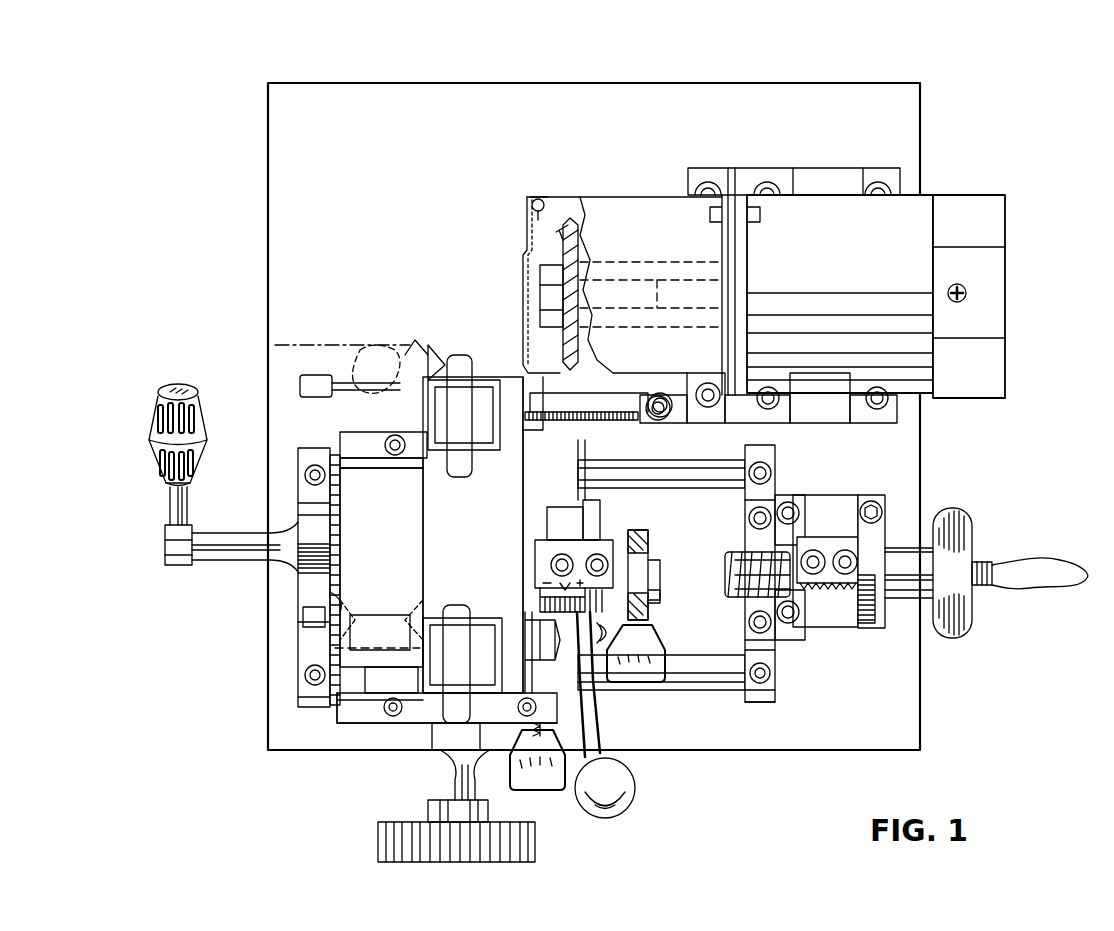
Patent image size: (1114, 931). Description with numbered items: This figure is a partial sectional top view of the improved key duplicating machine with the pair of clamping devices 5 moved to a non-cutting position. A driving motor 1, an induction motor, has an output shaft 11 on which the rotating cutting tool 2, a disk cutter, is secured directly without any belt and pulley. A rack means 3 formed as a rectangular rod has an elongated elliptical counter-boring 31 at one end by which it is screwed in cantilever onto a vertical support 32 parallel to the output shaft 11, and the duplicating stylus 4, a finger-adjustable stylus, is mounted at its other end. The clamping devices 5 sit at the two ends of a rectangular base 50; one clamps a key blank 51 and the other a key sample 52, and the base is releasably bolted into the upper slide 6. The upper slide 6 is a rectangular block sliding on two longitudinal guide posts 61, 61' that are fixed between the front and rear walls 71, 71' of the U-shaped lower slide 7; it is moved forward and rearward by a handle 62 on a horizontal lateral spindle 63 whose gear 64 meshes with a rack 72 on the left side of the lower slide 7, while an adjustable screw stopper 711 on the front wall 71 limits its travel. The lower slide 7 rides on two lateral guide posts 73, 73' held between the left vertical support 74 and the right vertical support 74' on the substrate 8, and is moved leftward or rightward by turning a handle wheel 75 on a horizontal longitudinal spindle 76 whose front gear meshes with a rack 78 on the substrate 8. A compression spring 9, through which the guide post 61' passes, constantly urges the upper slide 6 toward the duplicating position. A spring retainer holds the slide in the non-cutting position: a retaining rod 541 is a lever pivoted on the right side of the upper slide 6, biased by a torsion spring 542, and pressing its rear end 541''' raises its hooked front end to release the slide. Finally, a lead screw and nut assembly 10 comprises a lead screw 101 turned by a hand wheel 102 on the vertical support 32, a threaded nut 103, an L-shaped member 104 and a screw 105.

The driving motor 1 is at (930, 192).
The rotating cutting tool 2 is at (558, 228).
The output shaft 11 is at (627, 270).
The rack 78 is at (567, 400).
The clamping devices 5 is at (416, 428).
The rectangular base 50 is at (514, 372).
The key blank 51 is at (275, 345).
The handle 62 is at (166, 383).
The horizontal lateral spindle 63 is at (213, 563).
The left vertical support 74 is at (263, 583).
The gear 64 is at (330, 585).
The rack 72 is at (330, 597).
The key sample 52 is at (335, 657).
The front wall 71 is at (320, 414).
The upper slide 6 is at (353, 480).
The substrate 8 is at (356, 754).
The lower slide 7 is at (330, 724).
The rear wall 71' is at (377, 777).
The guide post 61 is at (309, 728).
The horizontal longitudinal spindle 76 is at (442, 764).
The handle wheel 75 is at (420, 864).
The guide post 61' is at (541, 804).
The compression spring 9 is at (568, 815).
The duplicating stylus 4 is at (575, 823).
The torsion spring 542 is at (607, 600).
The retaining rod 541 is at (651, 685).
The rear end of the retaining rod 541''' is at (667, 732).
The adjustable screw stopper 711 is at (590, 447).
The L-shaped member 104 is at (665, 692).
The guide post 73 is at (904, 557).
The guide post 73' is at (793, 753).
The right vertical support 74' is at (882, 732).
The nut 103 is at (772, 650).
The vertical support 32 is at (816, 528).
The rack means 3 is at (834, 552).
The elongated elliptical counter-boring 31 is at (875, 492).
The lead screw and nut assembly 10 is at (920, 632).
The hand wheel 102 is at (1058, 588).
The lead screw 101 is at (906, 602).
The screw 105 is at (652, 612).